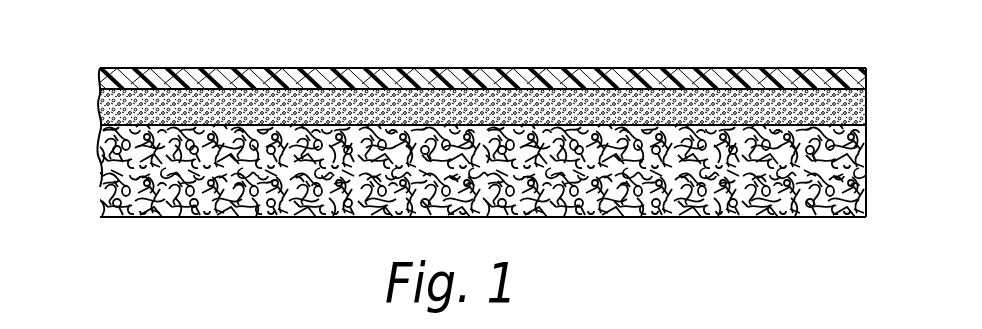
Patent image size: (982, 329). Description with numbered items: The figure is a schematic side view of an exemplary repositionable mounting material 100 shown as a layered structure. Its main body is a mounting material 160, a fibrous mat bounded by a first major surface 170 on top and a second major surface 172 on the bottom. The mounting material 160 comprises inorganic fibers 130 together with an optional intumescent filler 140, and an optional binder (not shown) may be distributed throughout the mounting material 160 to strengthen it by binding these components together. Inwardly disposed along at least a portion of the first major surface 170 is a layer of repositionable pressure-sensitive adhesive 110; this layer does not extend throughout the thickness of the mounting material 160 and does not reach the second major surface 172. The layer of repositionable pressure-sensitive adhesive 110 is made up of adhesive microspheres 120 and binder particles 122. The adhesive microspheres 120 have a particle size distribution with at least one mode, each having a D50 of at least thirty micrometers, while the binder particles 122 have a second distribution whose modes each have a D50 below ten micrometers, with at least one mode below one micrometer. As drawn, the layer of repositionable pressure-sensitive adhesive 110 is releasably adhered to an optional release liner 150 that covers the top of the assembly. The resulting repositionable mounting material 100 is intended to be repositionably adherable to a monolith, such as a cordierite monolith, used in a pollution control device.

The repositionable mounting material 100 is at (481, 136).
The layer of repositionable pressure-sensitive adhesive 110 is at (870, 90).
The adhesive microspheres 120 is at (100, 96).
The binder particles 122 is at (104, 133).
The inorganic fibers 130 is at (868, 172).
The intumescent filler 140 is at (868, 208).
The release liner 150 is at (863, 77).
The mounting material 160 is at (100, 187).
The first major surface 170 is at (182, 85).
The second major surface 172 is at (732, 218).